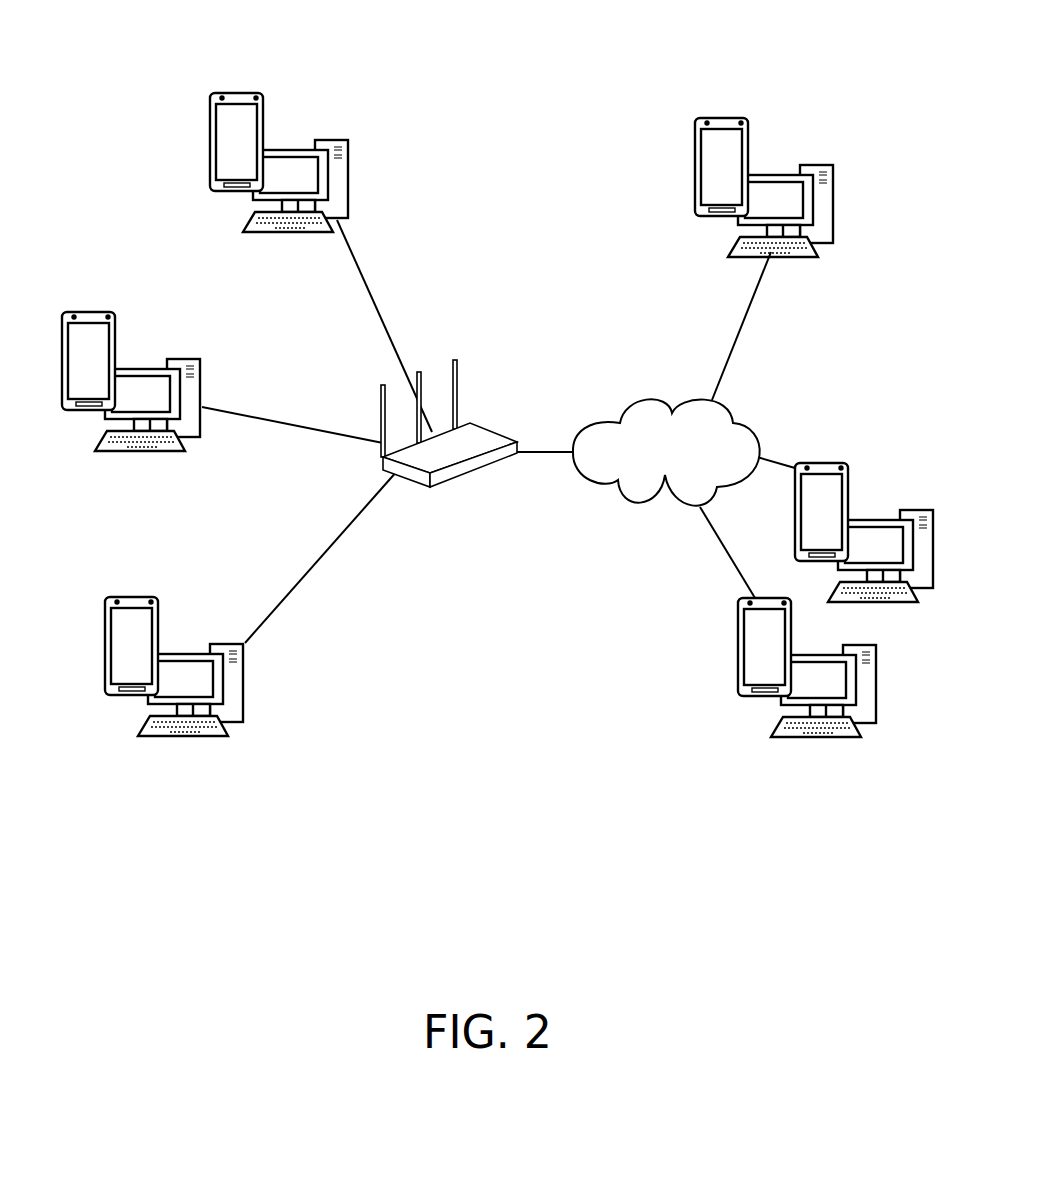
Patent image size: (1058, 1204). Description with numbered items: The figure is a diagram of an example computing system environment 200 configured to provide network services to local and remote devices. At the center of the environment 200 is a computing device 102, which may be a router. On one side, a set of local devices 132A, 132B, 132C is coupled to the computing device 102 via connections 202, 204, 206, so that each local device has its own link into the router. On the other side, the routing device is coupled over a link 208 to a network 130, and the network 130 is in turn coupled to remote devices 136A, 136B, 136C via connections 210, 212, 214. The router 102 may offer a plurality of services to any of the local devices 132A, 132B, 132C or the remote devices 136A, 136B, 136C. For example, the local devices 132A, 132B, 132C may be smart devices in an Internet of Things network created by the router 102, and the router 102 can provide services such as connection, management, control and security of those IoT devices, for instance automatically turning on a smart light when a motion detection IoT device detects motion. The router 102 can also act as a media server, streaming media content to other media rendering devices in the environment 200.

The computing system environment 200 is at (510, 992).
The computing device 102 is at (453, 482).
The network 130 is at (647, 400).
The local device 132A is at (269, 60).
The local device 132B is at (154, 272).
The local device 132C is at (182, 555).
The remote device 136A is at (771, 75).
The remote device 136B is at (874, 415).
The remote device 136C is at (813, 790).
The connection 202 is at (377, 306).
The connection 204 is at (250, 415).
The connection 206 is at (322, 557).
The communication link 208 is at (558, 453).
The connection 210 is at (743, 322).
The connection 212 is at (768, 463).
The connection 214 is at (723, 550).